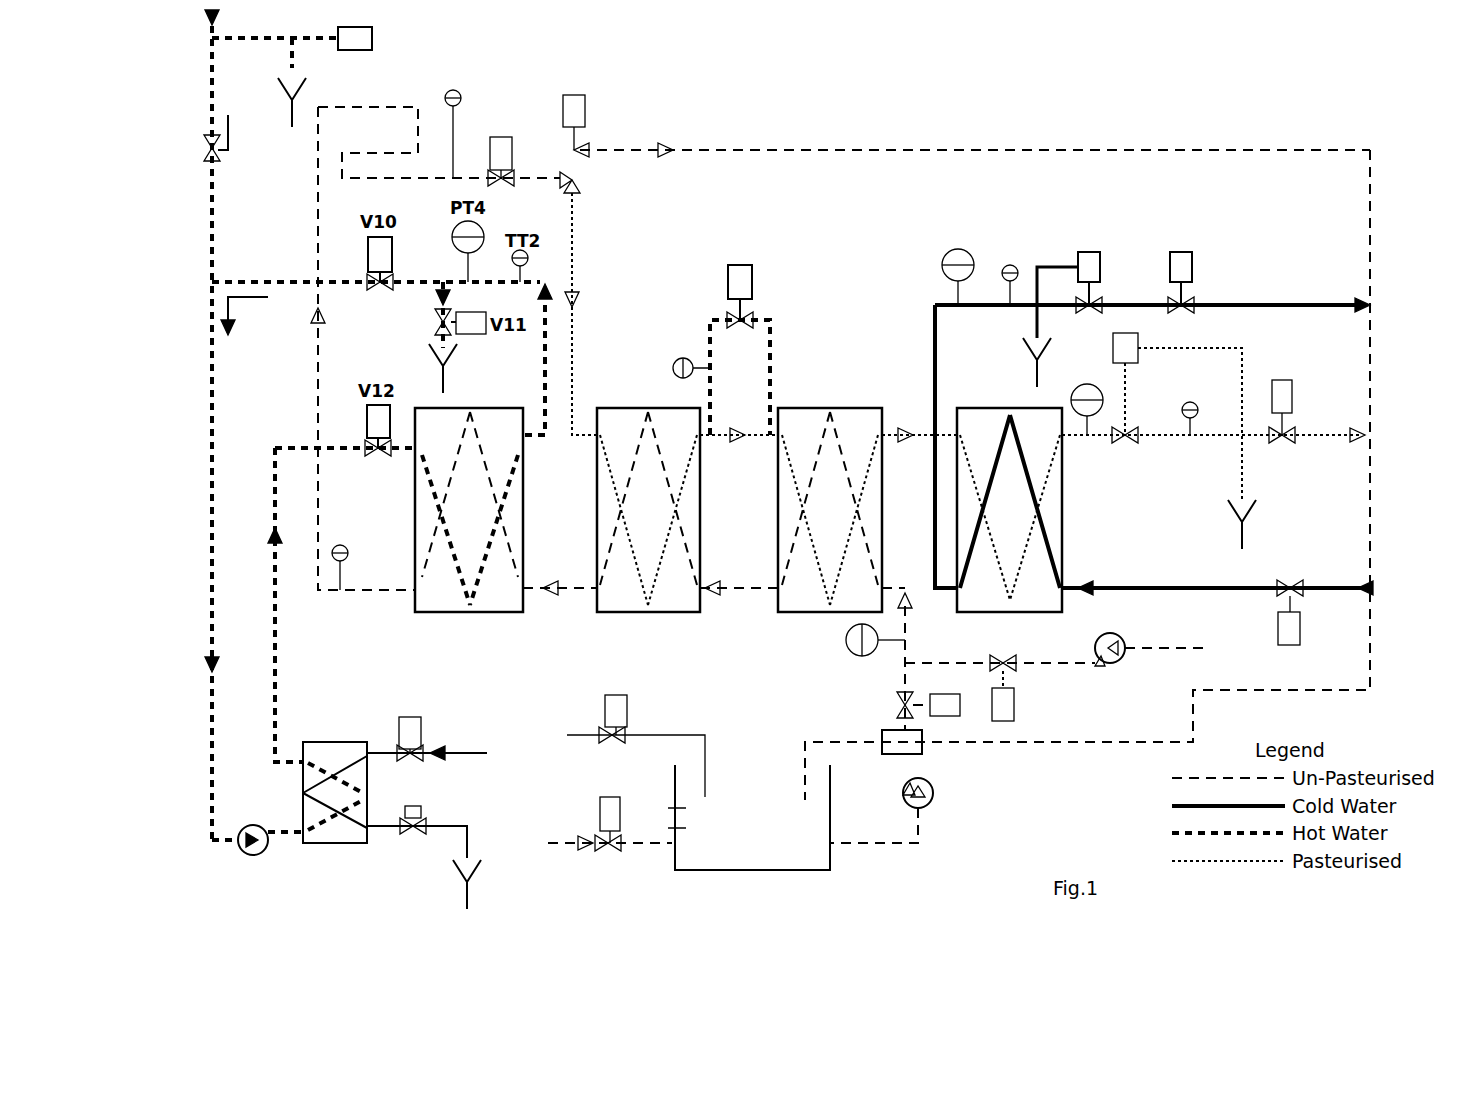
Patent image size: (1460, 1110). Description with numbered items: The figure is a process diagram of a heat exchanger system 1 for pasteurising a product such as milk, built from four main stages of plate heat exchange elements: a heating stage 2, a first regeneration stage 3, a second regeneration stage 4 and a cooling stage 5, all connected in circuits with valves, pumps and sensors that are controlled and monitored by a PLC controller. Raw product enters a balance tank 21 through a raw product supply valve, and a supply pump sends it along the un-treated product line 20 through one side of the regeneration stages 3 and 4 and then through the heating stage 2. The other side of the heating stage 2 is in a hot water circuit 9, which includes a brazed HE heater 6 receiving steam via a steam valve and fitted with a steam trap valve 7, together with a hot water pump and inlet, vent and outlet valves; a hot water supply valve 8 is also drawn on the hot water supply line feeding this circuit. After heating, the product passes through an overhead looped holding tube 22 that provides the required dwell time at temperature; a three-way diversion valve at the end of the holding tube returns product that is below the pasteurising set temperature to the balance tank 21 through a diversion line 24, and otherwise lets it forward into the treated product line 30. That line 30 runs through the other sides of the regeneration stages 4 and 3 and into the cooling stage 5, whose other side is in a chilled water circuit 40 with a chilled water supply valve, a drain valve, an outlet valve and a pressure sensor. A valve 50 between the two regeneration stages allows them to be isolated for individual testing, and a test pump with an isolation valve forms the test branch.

The heat exchanger system 1 is at (146, 151).
The heating stage 2 is at (506, 620).
The regeneration I stage 3 is at (826, 622).
The regeneration II stage 4 is at (666, 622).
The cooling stage 5 is at (1072, 545).
The brazed HE heater 6 is at (342, 715).
The steam trap valve 7 is at (421, 808).
The hot water supply valve 8 is at (210, 162).
The hot water circuit 9 is at (203, 633).
The un-treated product line 20 is at (580, 598).
The balance tank 21 is at (835, 858).
The holding tube 22 is at (397, 106).
The diversion line 24 is at (1101, 140).
The treated product line 30 is at (582, 252).
The chilled water circuit 40 is at (1150, 580).
The valve 50 is at (770, 280).